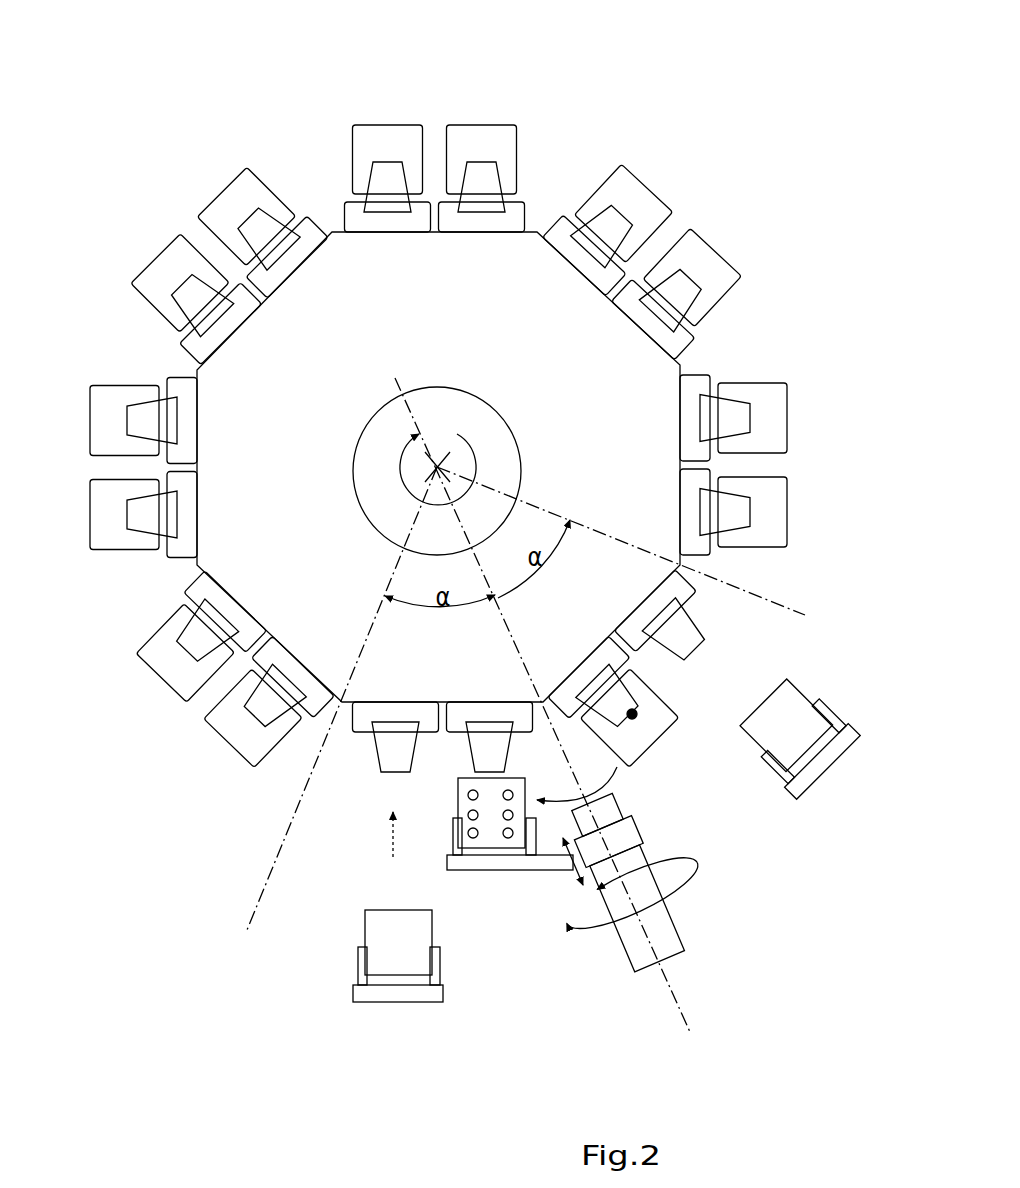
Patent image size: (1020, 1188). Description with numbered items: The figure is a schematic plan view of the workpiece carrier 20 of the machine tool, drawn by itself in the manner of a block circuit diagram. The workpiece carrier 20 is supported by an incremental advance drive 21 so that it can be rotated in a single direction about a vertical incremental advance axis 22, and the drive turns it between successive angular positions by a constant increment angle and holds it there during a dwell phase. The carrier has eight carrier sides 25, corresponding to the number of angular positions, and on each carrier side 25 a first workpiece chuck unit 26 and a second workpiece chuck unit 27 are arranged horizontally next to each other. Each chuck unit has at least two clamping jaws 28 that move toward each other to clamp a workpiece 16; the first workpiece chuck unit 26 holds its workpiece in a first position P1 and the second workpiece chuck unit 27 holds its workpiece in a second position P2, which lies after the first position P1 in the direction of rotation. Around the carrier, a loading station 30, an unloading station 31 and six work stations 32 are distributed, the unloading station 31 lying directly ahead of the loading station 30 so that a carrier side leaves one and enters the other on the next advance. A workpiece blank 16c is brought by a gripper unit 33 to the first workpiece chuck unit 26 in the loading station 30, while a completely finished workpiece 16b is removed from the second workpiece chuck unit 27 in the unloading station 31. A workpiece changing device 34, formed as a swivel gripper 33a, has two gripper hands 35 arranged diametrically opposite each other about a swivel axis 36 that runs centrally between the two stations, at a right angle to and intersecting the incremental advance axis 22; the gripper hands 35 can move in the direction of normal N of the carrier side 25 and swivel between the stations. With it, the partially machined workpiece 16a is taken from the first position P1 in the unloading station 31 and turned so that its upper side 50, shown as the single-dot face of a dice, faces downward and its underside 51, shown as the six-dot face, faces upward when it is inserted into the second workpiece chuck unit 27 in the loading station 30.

The workpiece 16 is at (398, 138).
The partially machined workpiece 16a is at (527, 793).
The completely finished workpiece 16b is at (790, 705).
The workpiece blank 16c is at (372, 930).
The workpiece carrier 20 is at (647, 398).
The incremental advance drive 21 is at (500, 407).
The incremental advance axis 22 is at (429, 429).
The carrier side 25 is at (337, 222).
The first workpiece chuck unit 26 is at (312, 242).
The second workpiece chuck unit 27 is at (213, 338).
The clamping jaws 28 is at (582, 190).
The loading station 30 is at (292, 997).
The unloading station 31 is at (770, 842).
The work station 32 is at (532, 72).
The gripper unit 33 is at (850, 767).
The swivel gripper 33a is at (604, 967).
The workpiece changing device 34 is at (705, 965).
The gripper hands 35 is at (853, 727).
The swivel axis 36 is at (678, 1025).
The upper side 50 is at (652, 707).
The underside 51 is at (495, 839).
The direction of normal N is at (436, 236).
The first position P1 is at (215, 183).
The second position P2 is at (657, 169).